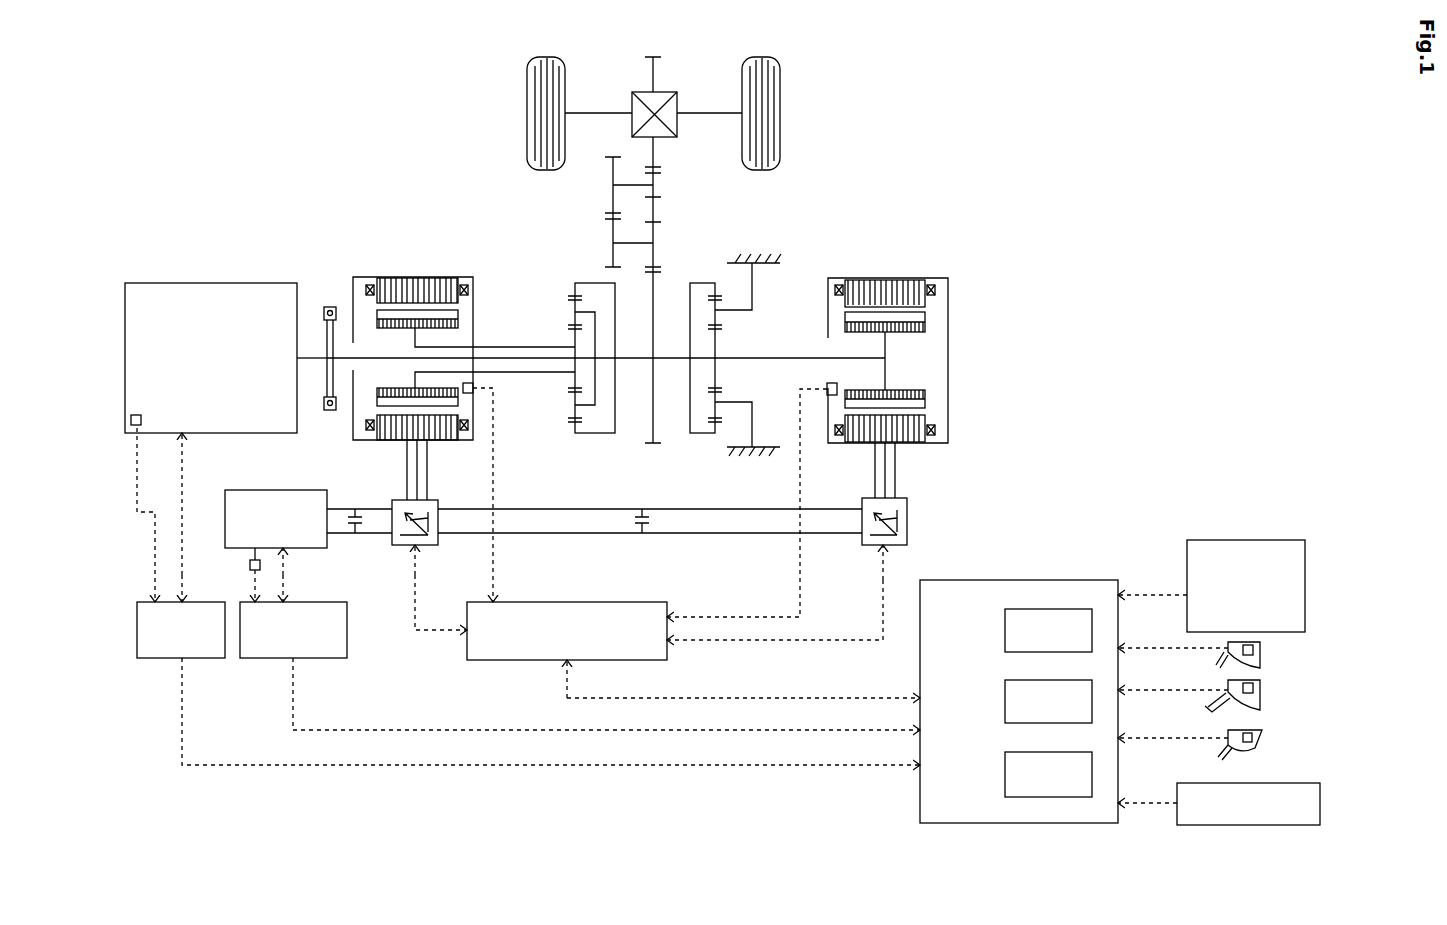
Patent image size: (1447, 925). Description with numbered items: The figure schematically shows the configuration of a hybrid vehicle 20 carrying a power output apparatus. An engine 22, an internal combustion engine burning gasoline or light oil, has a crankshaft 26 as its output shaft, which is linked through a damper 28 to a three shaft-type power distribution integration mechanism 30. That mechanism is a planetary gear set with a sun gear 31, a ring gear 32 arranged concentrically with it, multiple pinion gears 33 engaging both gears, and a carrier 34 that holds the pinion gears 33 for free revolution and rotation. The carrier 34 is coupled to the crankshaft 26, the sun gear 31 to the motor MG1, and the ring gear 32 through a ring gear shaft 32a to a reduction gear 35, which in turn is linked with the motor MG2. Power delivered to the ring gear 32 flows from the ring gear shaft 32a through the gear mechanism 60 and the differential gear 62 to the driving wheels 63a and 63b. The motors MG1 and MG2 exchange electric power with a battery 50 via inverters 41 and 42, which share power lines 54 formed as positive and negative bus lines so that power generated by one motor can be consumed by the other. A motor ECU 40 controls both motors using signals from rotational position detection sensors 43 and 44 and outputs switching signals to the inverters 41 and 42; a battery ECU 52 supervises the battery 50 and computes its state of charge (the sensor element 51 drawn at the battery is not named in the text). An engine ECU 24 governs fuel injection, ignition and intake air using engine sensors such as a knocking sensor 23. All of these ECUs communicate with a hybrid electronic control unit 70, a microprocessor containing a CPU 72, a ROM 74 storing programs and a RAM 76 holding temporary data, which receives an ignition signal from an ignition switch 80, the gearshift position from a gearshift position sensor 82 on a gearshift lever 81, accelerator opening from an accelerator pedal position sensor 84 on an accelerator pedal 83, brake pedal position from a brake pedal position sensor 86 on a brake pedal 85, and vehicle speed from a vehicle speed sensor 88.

The hybrid vehicle 20 is at (382, 793).
The engine 22 is at (213, 282).
The knocking sensor 23 is at (141, 428).
The engine electronic control unit 24 is at (160, 658).
The crankshaft 26 is at (313, 357).
The damper 28 is at (331, 305).
The power distribution integration mechanism 30 is at (552, 372).
The sun gear 31 is at (577, 345).
The ring gear 32 is at (577, 293).
The ring gear shaft 32a is at (657, 362).
The pinion gears 33 is at (577, 318).
The carrier 34 is at (597, 393).
The reduction gear 35 is at (710, 457).
The motor electronic control unit 40 is at (527, 660).
The inverter 41 is at (398, 545).
The inverter 42 is at (871, 547).
The rotational position detection sensor 43 is at (467, 393).
The rotational position detection sensor 44 is at (832, 395).
The battery 50 is at (277, 490).
The battery sensor 51 is at (250, 566).
The battery electronic control unit 52 is at (310, 658).
The power lines 54 is at (585, 512).
The gear mechanism 60 is at (570, 203).
The differential gear 62 is at (632, 98).
The driving wheel 63a is at (780, 80).
The driving wheel 63b is at (527, 80).
The hybrid electronic control unit 70 is at (1019, 723).
The CPU 72 is at (1005, 770).
The ROM 74 is at (1005, 700).
The RAM 76 is at (1005, 630).
The ignition switch 80 is at (1320, 810).
The gearshift lever 81 is at (1255, 755).
The gearshift position sensor 82 is at (1255, 740).
The accelerator pedal 83 is at (1255, 700).
The accelerator pedal position sensor 84 is at (1260, 690).
The brake pedal 85 is at (1255, 653).
The brake pedal position sensor 86 is at (1260, 652).
The vehicle speed sensor 88 is at (1305, 590).
The motor MG1 is at (405, 278).
The motor MG2 is at (907, 443).